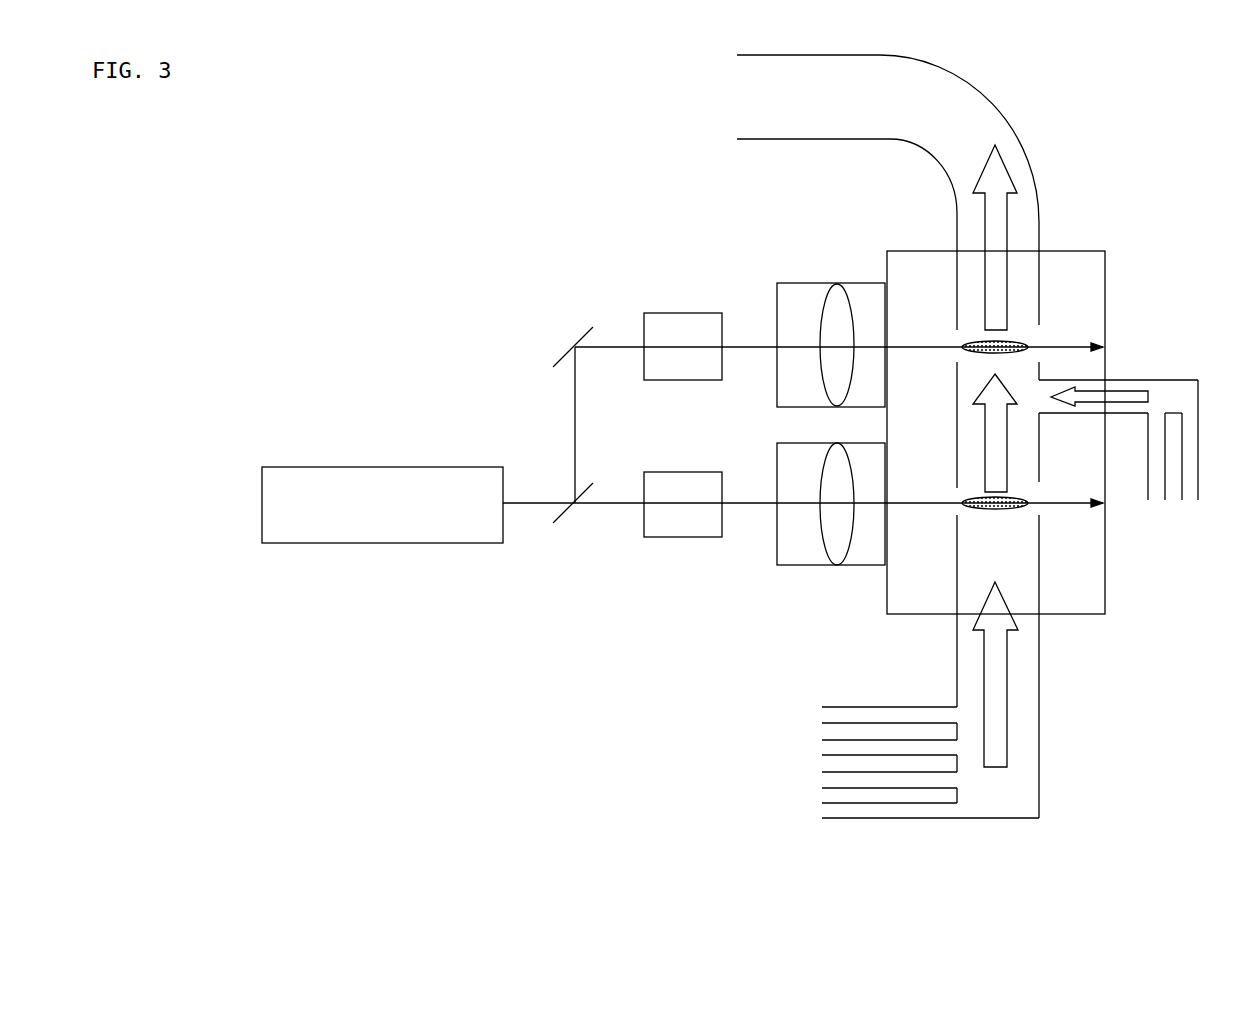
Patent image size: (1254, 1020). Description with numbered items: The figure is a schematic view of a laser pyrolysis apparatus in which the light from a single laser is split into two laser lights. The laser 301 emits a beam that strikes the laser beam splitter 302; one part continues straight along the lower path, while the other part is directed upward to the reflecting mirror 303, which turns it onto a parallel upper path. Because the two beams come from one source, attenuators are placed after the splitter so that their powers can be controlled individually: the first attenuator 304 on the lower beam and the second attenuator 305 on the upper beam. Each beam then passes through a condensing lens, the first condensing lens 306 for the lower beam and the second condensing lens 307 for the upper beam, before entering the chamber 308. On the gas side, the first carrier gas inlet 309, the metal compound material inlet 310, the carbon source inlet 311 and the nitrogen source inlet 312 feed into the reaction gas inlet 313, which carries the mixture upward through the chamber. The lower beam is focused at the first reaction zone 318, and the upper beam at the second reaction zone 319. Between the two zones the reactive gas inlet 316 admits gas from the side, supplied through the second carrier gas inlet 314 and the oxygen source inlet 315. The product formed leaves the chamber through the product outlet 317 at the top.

The laser 301 is at (382, 531).
The laser beam splitter 302 is at (572, 529).
The reflecting mirror 303 is at (572, 326).
The first attenuator 304 is at (683, 528).
The second attenuator 305 is at (683, 327).
The first condensing lens 306 is at (831, 362).
The second condensing lens 307 is at (831, 524).
The chamber 308 is at (996, 432).
The first carrier gas inlet 309 is at (818, 713).
The metal compound material inlet 310 is at (818, 747).
The carbon source inlet 311 is at (818, 780).
The nitrogen source inlet 312 is at (818, 812).
The reaction gas inlet 313 is at (1029, 481).
The second carrier gas inlet 314 is at (1156, 507).
The oxygen source inlet 315 is at (1189, 507).
The reactive gas inlet 316 is at (1135, 387).
The product outlet 317 is at (888, 138).
The first reaction zone 318 is at (1010, 519).
The second reaction zone 319 is at (1025, 341).